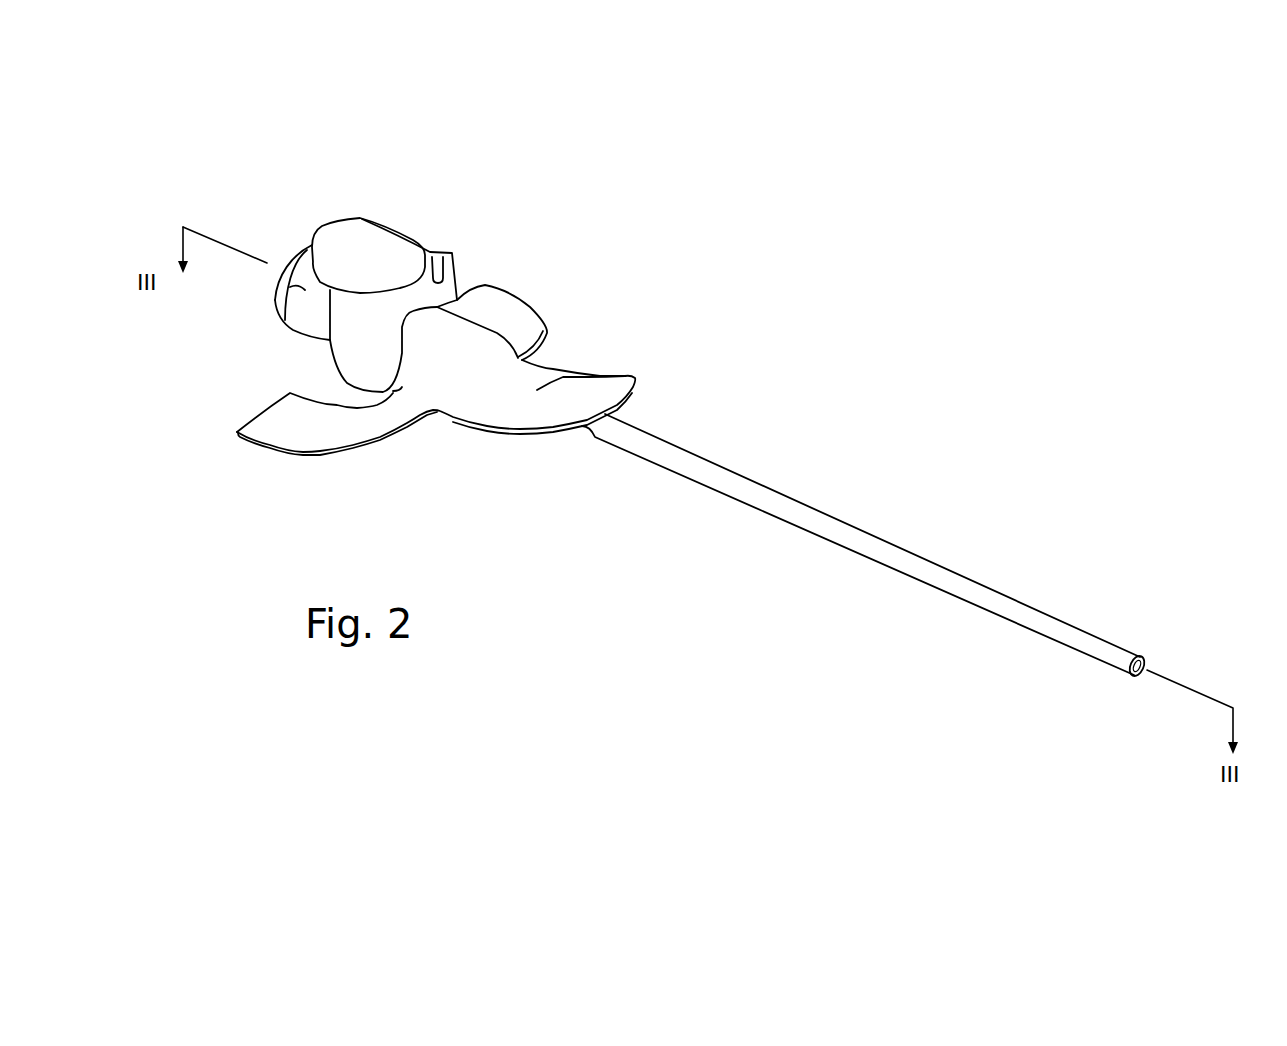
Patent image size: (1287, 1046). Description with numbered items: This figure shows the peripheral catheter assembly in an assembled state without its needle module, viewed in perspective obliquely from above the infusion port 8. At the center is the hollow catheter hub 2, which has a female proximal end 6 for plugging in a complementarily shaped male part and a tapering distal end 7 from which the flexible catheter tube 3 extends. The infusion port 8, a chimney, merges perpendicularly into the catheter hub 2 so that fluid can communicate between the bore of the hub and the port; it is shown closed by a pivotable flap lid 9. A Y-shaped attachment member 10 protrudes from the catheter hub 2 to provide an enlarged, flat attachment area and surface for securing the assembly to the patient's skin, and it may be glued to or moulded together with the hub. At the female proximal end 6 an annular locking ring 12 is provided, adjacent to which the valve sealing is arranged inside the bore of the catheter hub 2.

The hollow catheter hub 2 is at (424, 196).
The flexible catheter tube 3 is at (980, 596).
The female proximal end 6 is at (283, 270).
The tapering distal end 7 is at (562, 388).
The infusion port 8 is at (363, 330).
The pivotable flap lid 9 is at (362, 252).
The Y-shaped attachment member 10 is at (268, 291).
The annular locking ring 12 is at (277, 302).